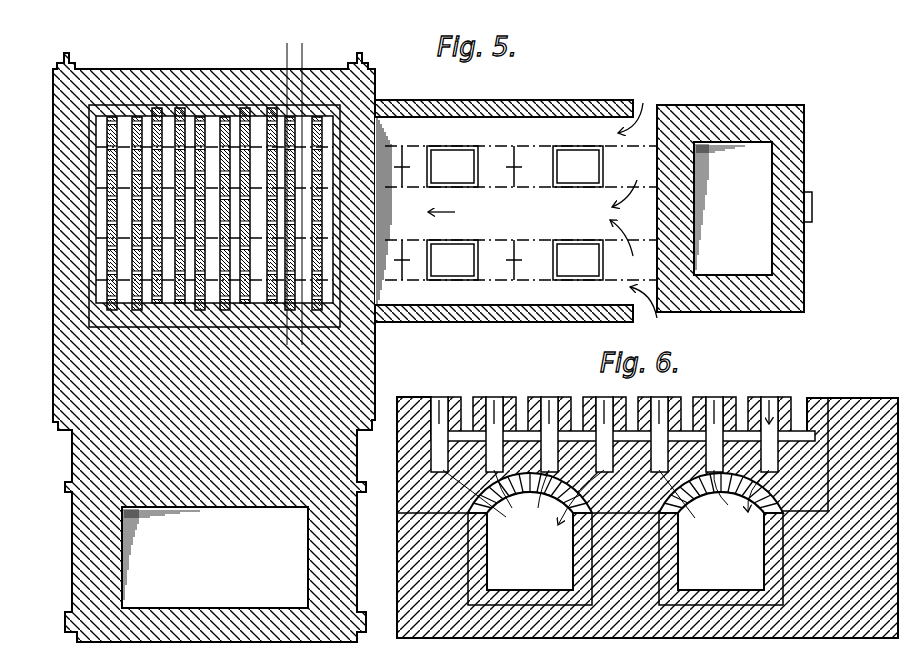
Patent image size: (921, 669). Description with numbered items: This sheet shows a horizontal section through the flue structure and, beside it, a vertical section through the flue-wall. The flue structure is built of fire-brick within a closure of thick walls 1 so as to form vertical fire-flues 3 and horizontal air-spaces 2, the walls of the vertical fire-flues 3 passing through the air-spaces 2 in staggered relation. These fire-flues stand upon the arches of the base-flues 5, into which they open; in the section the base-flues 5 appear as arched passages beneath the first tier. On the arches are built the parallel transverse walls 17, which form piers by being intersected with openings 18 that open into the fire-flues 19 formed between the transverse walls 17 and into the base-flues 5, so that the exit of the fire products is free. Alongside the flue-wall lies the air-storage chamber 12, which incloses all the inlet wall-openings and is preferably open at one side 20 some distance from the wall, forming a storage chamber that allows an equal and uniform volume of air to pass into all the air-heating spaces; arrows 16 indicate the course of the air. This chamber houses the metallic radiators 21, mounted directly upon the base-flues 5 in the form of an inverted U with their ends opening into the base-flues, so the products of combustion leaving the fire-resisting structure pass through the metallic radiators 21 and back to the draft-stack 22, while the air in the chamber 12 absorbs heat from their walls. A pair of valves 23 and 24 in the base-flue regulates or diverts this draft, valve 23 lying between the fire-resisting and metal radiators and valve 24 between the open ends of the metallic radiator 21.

In FIG. 5, the thick walls 1 is at (53, 218).
In FIG. 6, the air-spaces 2 is at (755, 400).
In FIG. 6, the vertical fire-flues 3 is at (792, 400).
In FIG. 6, the base-flues 5 is at (613, 537).
In FIG. 5, the air-storage chamber 12 is at (521, 213).
In FIG. 5, the arrows showing course of the air 16 is at (633, 194).
In FIG. 5, the transverse walls 17 is at (138, 117).
In FIG. 6, the transverse walls 17 is at (436, 461).
In FIG. 5, the openings 18 is at (287, 191).
In FIG. 6, the openings 18 is at (605, 434).
In FIG. 5, the fire-flues 19 is at (193, 117).
In FIG. 5, the open side 20 is at (654, 110).
In FIG. 5, the metallic radiators 21 is at (515, 213).
In FIG. 5, the draft-stack 22 is at (734, 208).
In FIG. 5, the valve 23 is at (401, 226).
In FIG. 5, the valve 24 is at (530, 215).